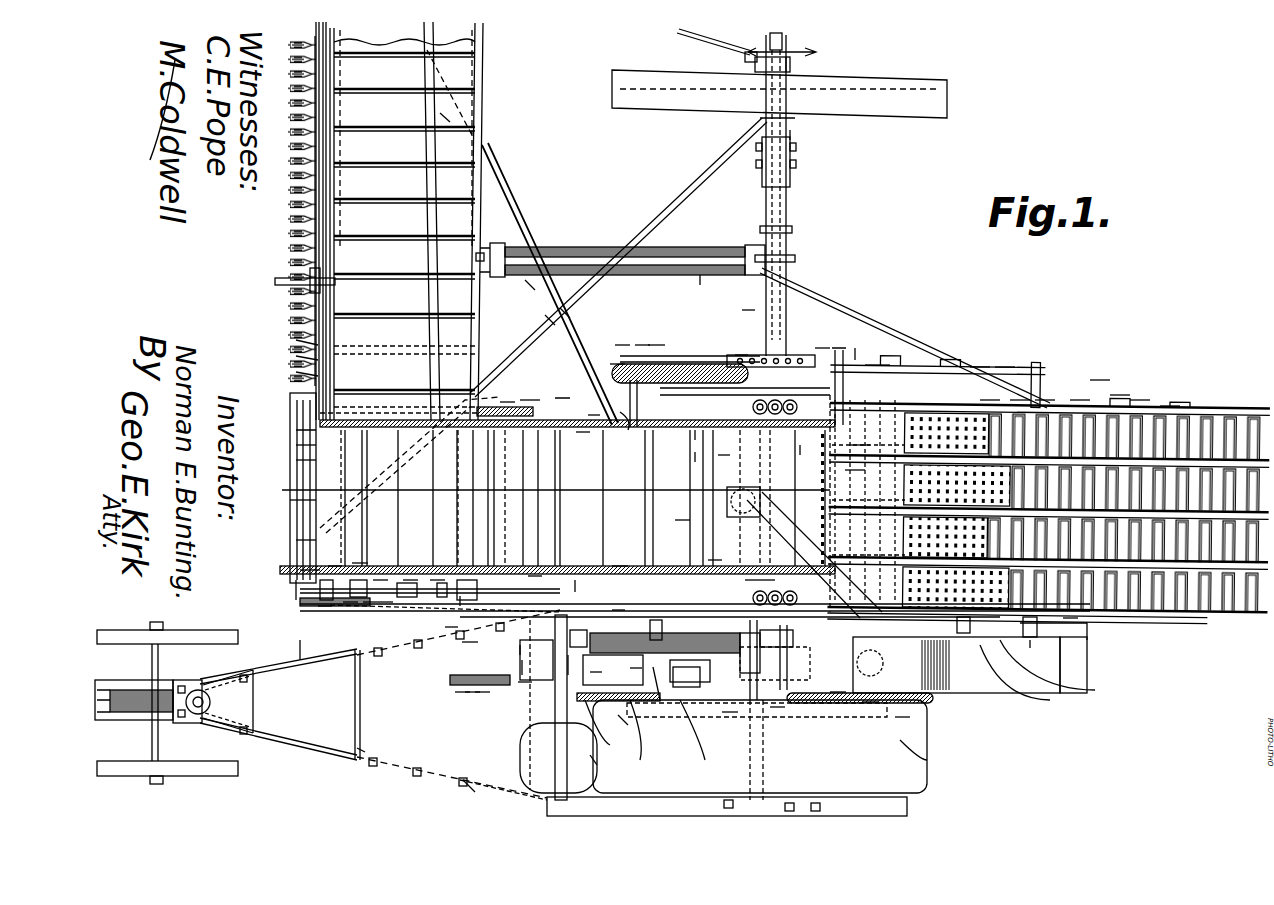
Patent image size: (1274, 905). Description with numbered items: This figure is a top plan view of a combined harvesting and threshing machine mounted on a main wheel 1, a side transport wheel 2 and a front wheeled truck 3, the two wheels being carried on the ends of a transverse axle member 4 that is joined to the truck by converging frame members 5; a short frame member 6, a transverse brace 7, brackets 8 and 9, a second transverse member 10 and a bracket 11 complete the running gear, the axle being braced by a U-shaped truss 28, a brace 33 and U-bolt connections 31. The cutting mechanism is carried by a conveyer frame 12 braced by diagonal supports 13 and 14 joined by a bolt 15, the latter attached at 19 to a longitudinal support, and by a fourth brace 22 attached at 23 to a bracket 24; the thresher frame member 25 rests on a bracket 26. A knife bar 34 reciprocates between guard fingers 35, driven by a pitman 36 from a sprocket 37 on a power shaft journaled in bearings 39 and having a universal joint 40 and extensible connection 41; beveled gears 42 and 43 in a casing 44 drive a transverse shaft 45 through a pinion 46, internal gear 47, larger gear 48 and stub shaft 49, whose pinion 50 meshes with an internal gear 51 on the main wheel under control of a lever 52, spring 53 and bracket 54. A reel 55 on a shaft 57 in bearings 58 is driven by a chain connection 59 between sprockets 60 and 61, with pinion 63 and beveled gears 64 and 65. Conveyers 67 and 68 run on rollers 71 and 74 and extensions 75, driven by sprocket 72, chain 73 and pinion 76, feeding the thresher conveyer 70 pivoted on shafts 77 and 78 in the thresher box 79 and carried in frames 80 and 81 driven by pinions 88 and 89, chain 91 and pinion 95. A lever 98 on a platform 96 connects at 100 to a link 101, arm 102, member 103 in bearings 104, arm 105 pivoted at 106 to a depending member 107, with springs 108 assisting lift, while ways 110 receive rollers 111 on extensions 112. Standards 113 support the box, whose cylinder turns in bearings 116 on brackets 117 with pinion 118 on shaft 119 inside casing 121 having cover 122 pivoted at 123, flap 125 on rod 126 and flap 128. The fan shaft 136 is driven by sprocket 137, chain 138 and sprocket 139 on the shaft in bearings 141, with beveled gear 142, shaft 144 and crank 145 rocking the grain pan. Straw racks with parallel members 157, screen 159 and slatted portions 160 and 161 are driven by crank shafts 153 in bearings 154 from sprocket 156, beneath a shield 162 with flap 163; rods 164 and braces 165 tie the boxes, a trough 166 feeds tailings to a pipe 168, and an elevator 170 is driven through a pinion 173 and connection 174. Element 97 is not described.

The main wheel 1 is at (930, 752).
The side transport wheel 2 is at (940, 98).
The front wheeled truck 3 is at (287, 490).
The axle member 4 is at (786, 200).
The longitudinally disposed frame members 5 is at (593, 571).
The short rearwardly extending frame member 6 is at (596, 672).
The transversely disposed brace or frame member 7 is at (555, 700).
The bracket 8 is at (776, 797).
The second transverse frame member 10 is at (325, 606).
The bracket 11 is at (792, 230).
The conveyer frame 12 is at (483, 98).
The diagonally disposed cross support or brace 13 is at (550, 320).
The diagonally disposed cross support or brace 14 is at (530, 283).
The bolt 15 is at (567, 313).
The attachment point 19 is at (730, 712).
The fourth diagonally disposed support or brace 22 is at (690, 38).
The attachment point 23 is at (752, 62).
The bracket 24 is at (790, 63).
The longitudinally disposed frame member 25 is at (977, 367).
The bracket 26 is at (740, 355).
The U-shaped truss or channel 28 is at (792, 280).
The flat U-bolt connection 31 is at (832, 335).
The brace 33 is at (822, 347).
The knife bar 34 is at (300, 322).
The guard fingers 35 is at (300, 345).
The pitman connection 36 is at (290, 505).
The sprocket 37 is at (300, 586).
The bearings 39 is at (301, 650).
The universal joint 40 is at (410, 580).
The extensible connection 41 is at (437, 580).
The beveled gear 42 is at (620, 566).
The beveled gear 43 is at (618, 610).
The gear casing 44 is at (582, 585).
The transversely disposed shaft 45 is at (625, 412).
The pinion 46 is at (620, 722).
The internal gear 47 is at (636, 668).
The larger gear 48 is at (570, 665).
The stub shaft 49 is at (624, 722).
The pinion 50 is at (380, 580).
The internal gear 51 is at (672, 725).
The controlling lever 52 is at (598, 742).
The spring 53 is at (597, 760).
The bracket 54 is at (700, 702).
The reel 55 is at (487, 158).
The reel shaft 57 is at (318, 362).
The bearings 58 is at (300, 540).
The sprocket and chain connection 59 is at (335, 566).
The sprocket 60 is at (310, 572).
The small sprocket 61 is at (360, 563).
The pinion 63 is at (370, 602).
The beveled gear 64 is at (350, 602).
The beveled gear 65 is at (385, 602).
The conveyer 67 is at (450, 118).
The conveyer 68 is at (300, 430).
The thresher feeding conveyer 70 is at (705, 280).
The rollers 71 is at (318, 377).
The sprocket 72 is at (295, 415).
The chain 73 is at (300, 445).
The rollers 74 is at (273, 535).
The spaced extensions 75 is at (535, 576).
The pinion 76 is at (750, 132).
The shaft 77 is at (792, 125).
The shaft 78 is at (827, 130).
The thresher frame or box 79 is at (1080, 400).
The conveyer frame 80 is at (582, 432).
The conveyer frame 81 is at (595, 415).
The pinion 88 is at (715, 560).
The pinion 89 is at (680, 520).
The chain 91 is at (800, 655).
The pinion 95 is at (777, 707).
The platform 96 is at (368, 750).
The frame bar 97 is at (470, 790).
The vertically extending lever 98 is at (462, 692).
The connection point 100 is at (472, 692).
The rearwardly extending link 101 is at (482, 692).
The upstanding arm 102 is at (525, 682).
The transversely disposed member 103 is at (520, 650).
The bearings 104 is at (522, 668).
The forwardly protruding arm 105 is at (470, 642).
The pivot connection 106 is at (450, 627).
The depending member 107 is at (468, 600).
The springs 108 is at (745, 250).
The elongated ways 110 is at (840, 362).
The rollers 111 is at (530, 400).
The rearward extensions 112 is at (508, 402).
The standards 113 is at (640, 345).
The bearings 116 is at (885, 389).
The brackets 117 is at (935, 389).
The pinion 118 is at (860, 350).
The cylinder shaft 119 is at (1022, 628).
The metallic casing 121 is at (805, 450).
The removable cover 122 is at (855, 470).
The pivot 123 is at (860, 445).
The pivoted flap 125 is at (725, 458).
The transverse rod 126 is at (700, 458).
The flap 128 is at (1020, 400).
The fan shaft 136 is at (748, 310).
The sprocket 137 is at (690, 356).
The chain 138 is at (655, 345).
The sprocket 139 is at (618, 364).
The bearings 141 is at (620, 345).
The beveled gear 142 is at (700, 435).
The longitudinally and downwardly disposed shaft 144 is at (905, 365).
The crank 145 is at (870, 367).
The multiple throw crank shafts 153 is at (970, 367).
The bearings 154 is at (1140, 400).
The sprocket 156 is at (838, 692).
The parallel members 157 is at (1232, 398).
The perforated screen 159 is at (1045, 400).
The slatted portion 160 is at (1070, 620).
The slatted portion 161 is at (1170, 406).
The curved shield 162 is at (990, 400).
The flexible flap 163 is at (1003, 367).
The rods 164 is at (917, 367).
The braces 165 is at (1000, 692).
The slanting trough 166 is at (1085, 672).
The pipe 168 is at (745, 487).
The elevator 170 is at (927, 760).
The pinion 173 is at (870, 702).
The chain and sprocket connection 174 is at (902, 717).
The bracket 9 is at (1035, 647).